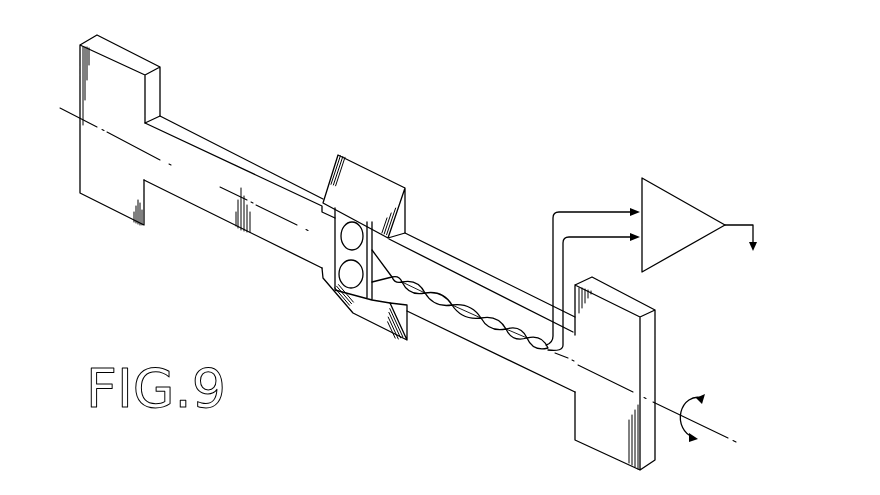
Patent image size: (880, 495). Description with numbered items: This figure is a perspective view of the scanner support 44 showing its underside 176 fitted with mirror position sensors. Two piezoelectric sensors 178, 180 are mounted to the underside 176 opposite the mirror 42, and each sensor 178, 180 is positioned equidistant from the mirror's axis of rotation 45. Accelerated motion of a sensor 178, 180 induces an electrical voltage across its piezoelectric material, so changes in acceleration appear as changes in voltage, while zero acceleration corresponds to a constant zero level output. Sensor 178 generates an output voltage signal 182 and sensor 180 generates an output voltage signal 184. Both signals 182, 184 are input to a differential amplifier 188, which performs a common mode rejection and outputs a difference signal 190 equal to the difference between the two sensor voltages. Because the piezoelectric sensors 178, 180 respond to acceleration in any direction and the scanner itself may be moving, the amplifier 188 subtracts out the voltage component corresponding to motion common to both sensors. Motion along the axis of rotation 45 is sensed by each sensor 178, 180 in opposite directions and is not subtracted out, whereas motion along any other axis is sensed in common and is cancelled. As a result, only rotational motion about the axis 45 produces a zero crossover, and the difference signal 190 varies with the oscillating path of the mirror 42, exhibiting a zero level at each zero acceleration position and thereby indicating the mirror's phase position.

The underside 176 is at (213, 182).
The mirror 42 is at (426, 196).
The support 44 is at (470, 262).
The piezoelectric sensor 178 is at (326, 193).
The piezoelectric sensor 180 is at (348, 275).
The output voltage signal 182 is at (575, 210).
The output voltage signal 184 is at (585, 238).
The differential amplifier 188 is at (676, 193).
The difference signal 190 is at (746, 222).
The axis of rotation 45 is at (722, 427).